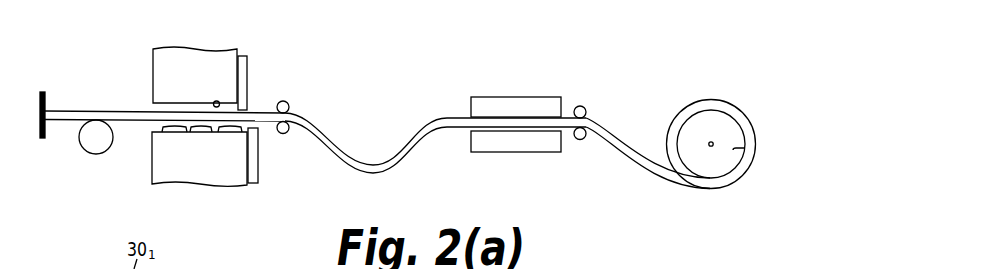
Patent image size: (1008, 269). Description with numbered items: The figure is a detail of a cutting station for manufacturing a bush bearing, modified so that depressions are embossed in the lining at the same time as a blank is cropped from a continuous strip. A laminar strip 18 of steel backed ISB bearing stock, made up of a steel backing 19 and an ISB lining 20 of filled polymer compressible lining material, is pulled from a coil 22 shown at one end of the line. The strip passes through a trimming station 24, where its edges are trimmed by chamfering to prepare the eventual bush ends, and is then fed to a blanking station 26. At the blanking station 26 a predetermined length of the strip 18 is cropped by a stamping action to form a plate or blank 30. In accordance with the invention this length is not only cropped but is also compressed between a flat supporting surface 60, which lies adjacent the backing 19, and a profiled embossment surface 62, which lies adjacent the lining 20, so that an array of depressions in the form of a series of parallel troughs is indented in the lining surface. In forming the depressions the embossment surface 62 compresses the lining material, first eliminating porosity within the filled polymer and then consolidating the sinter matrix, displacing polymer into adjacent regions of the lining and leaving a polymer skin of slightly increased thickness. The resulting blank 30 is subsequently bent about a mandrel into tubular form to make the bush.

The laminar strip 18 is at (618, 143).
The steel backing 19 is at (320, 133).
The ISB lining 20 is at (320, 148).
The coil 22 is at (680, 110).
The trimming station 24 is at (517, 102).
The blanking station 26 is at (191, 46).
The blank 30 is at (122, 112).
The flat supporting surface 60 is at (214, 101).
The profiled embossment surface 62 is at (212, 125).